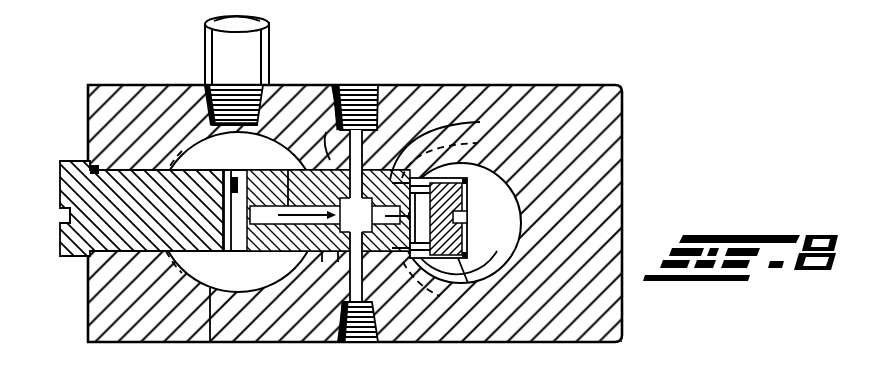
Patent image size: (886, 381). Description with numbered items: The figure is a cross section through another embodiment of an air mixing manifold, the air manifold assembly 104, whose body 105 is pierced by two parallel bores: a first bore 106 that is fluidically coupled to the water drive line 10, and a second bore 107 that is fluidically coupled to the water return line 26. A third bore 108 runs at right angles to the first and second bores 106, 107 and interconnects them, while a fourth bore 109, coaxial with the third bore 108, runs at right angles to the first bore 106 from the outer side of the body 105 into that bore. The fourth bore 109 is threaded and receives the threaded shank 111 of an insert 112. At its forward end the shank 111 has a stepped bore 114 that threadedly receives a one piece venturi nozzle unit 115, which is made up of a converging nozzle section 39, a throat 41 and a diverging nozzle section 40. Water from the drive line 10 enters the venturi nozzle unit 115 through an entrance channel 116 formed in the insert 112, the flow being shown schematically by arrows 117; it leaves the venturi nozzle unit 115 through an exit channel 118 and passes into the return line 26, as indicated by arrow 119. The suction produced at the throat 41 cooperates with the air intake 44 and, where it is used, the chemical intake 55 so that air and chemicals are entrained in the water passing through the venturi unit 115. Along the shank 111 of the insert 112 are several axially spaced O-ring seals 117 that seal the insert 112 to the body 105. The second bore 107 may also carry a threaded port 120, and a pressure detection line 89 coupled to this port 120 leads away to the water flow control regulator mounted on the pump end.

The water drive line 10 is at (505, 220).
The water return line 26 is at (193, 270).
The converging nozzle section 39 is at (412, 150).
The diverging nozzle section 40 is at (288, 175).
The throat 41 is at (330, 150).
The air intake 44 is at (343, 172).
The chemical intake 55 is at (357, 343).
The pressure detection line 89 is at (270, 32).
The air manifold assembly 104 is at (551, 82).
The body 105 is at (485, 97).
The first bore 106 is at (490, 280).
The second bore 107 is at (210, 343).
The third bore 108 is at (372, 172).
The fourth bore 109 is at (92, 168).
The threaded shank 111 is at (90, 313).
The insert 112 is at (57, 252).
The stepped bore 114 is at (327, 262).
The venturi nozzle unit 115 is at (468, 283).
The entrance channel 116 is at (464, 248).
The O-ring seals 117 is at (90, 166).
The exit channel 118 is at (240, 253).
The arrow 119 is at (243, 170).
The threaded port 120 is at (227, 85).